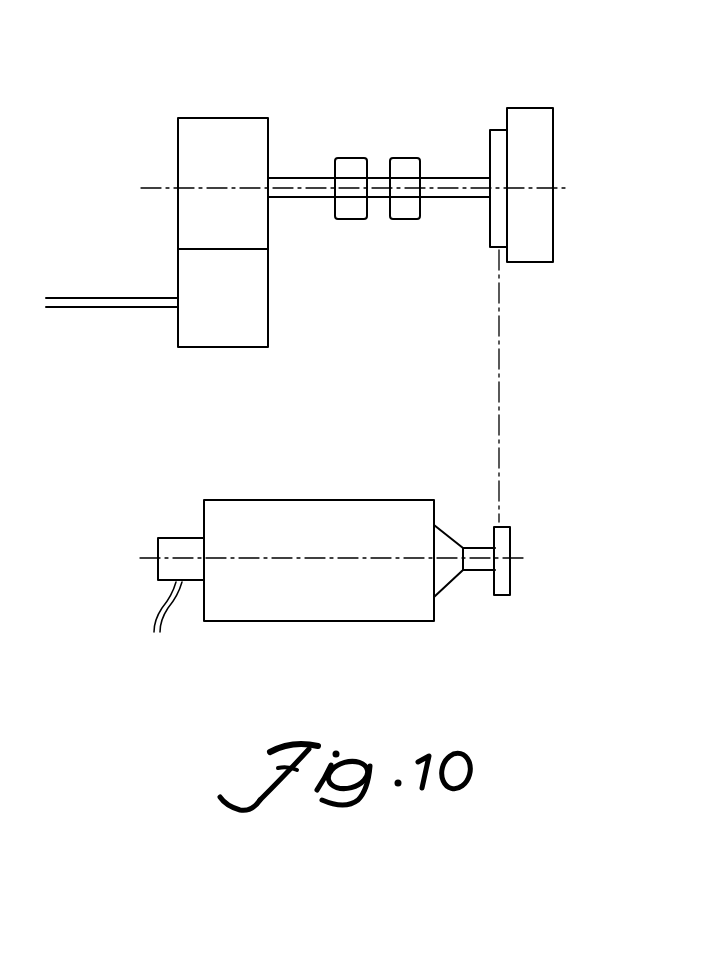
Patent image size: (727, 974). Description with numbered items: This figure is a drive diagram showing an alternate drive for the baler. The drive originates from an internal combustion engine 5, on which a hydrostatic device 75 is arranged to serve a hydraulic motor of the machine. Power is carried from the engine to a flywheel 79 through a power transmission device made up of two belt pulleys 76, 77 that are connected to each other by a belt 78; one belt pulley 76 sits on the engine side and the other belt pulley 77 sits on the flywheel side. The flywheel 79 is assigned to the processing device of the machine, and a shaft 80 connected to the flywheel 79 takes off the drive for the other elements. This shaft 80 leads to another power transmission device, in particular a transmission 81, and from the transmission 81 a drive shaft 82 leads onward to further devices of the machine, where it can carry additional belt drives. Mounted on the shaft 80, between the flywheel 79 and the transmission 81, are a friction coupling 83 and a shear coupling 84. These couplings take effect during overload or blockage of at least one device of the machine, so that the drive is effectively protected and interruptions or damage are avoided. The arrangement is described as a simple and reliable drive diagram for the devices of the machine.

The internal combustion engine 5 is at (342, 520).
The hydrostatic device 75 is at (170, 538).
The belt pulley 76 is at (505, 538).
The belt pulley 77 is at (500, 147).
The belt 78 is at (505, 463).
The flywheel 79 is at (537, 220).
The shaft 80 is at (450, 177).
The transmission 81 is at (222, 118).
The drive shaft 82 is at (133, 307).
The friction coupling 83 is at (340, 158).
The shear coupling 84 is at (400, 158).